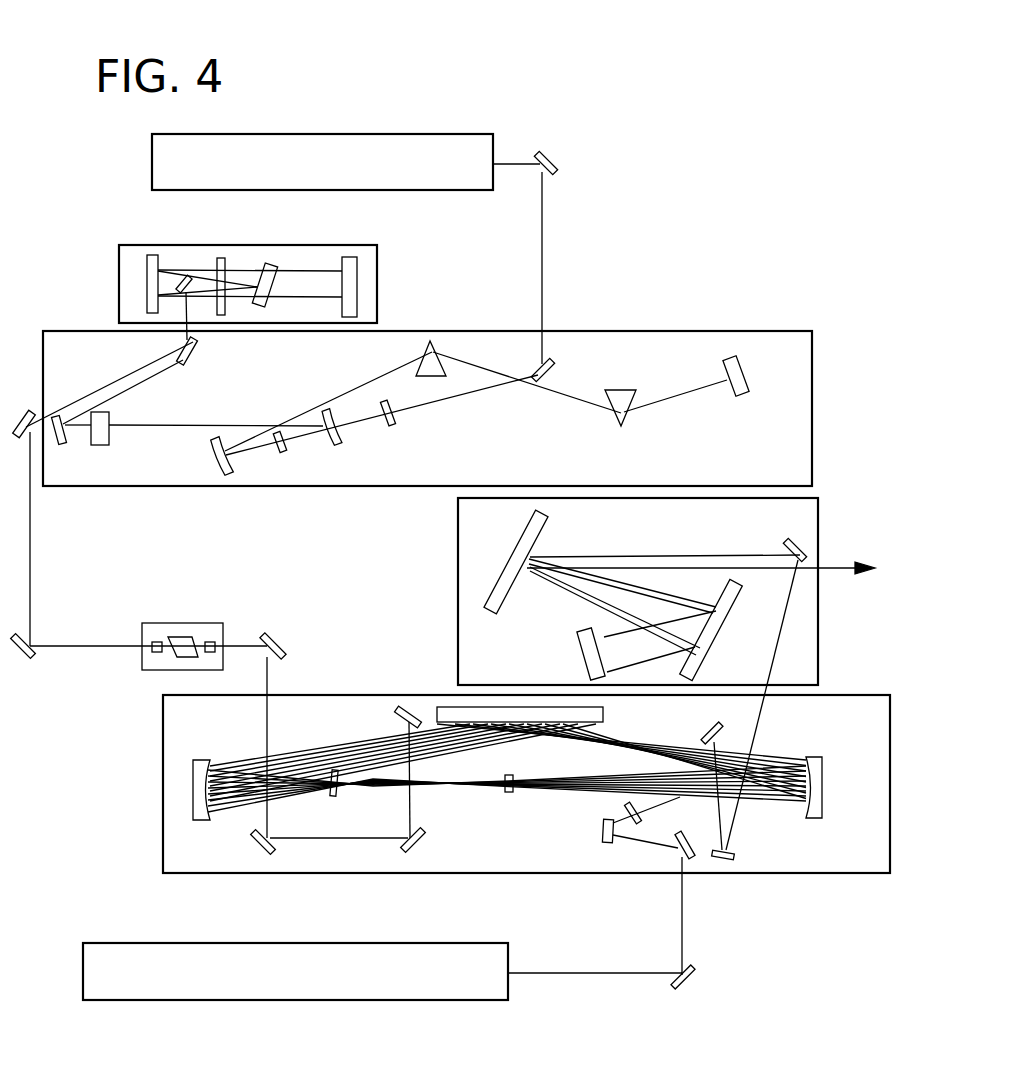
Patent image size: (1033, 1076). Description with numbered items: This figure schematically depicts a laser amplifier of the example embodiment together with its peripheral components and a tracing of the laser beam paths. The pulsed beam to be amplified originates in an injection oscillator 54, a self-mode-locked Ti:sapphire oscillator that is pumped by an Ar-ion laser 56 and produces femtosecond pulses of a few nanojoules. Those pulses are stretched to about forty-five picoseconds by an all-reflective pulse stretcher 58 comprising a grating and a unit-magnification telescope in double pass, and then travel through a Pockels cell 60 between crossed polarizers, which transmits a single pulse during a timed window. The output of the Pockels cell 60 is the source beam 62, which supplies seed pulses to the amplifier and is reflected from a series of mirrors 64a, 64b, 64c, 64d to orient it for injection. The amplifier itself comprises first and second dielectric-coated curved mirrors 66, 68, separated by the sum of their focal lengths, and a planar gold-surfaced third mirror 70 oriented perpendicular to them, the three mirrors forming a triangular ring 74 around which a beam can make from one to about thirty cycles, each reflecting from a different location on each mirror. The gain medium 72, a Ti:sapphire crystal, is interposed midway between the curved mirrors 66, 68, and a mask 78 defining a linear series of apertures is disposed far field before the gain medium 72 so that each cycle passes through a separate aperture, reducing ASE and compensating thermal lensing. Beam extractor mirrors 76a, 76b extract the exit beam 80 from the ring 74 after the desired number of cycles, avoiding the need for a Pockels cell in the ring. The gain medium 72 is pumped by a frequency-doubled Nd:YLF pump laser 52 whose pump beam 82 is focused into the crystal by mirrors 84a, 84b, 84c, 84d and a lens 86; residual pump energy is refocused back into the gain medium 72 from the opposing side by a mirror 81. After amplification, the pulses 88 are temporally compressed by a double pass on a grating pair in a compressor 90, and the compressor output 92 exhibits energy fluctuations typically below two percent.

The pump laser 52 is at (470, 1000).
The injection oscillator 54 is at (812, 388).
The Ar-ion laser 56 is at (403, 137).
The pulse stretcher 58 is at (310, 245).
The Pockels cell 60 is at (198, 623).
The source beam 62 is at (267, 683).
The mirror 64a is at (270, 643).
The mirror 64b is at (258, 852).
The mirror 64c is at (418, 850).
The mirror 64d is at (405, 710).
The first curved mirror 66 is at (193, 783).
The second curved mirror 68 is at (822, 778).
The third mirror 70 is at (453, 703).
The gain medium 72 is at (505, 793).
The triangular ring 74 is at (777, 806).
The beam extractor mirror 76a is at (707, 730).
The beam extractor mirror 76b is at (733, 860).
The mask 78 is at (373, 790).
The exit beam 80 is at (760, 750).
The mirror 81 is at (333, 797).
The pump beam 82 is at (600, 973).
The mirror 84a is at (690, 980).
The mirror 84b is at (693, 857).
The mirror 84c is at (603, 832).
The mirror 84d is at (683, 797).
The lens 86 is at (625, 805).
The pulses 88 is at (777, 624).
The compressor 90 is at (818, 630).
The compressor output 92 is at (828, 568).